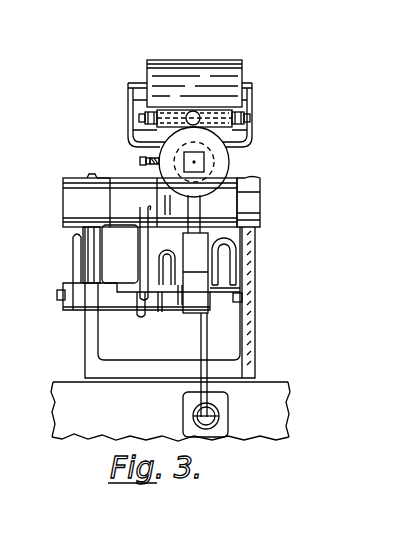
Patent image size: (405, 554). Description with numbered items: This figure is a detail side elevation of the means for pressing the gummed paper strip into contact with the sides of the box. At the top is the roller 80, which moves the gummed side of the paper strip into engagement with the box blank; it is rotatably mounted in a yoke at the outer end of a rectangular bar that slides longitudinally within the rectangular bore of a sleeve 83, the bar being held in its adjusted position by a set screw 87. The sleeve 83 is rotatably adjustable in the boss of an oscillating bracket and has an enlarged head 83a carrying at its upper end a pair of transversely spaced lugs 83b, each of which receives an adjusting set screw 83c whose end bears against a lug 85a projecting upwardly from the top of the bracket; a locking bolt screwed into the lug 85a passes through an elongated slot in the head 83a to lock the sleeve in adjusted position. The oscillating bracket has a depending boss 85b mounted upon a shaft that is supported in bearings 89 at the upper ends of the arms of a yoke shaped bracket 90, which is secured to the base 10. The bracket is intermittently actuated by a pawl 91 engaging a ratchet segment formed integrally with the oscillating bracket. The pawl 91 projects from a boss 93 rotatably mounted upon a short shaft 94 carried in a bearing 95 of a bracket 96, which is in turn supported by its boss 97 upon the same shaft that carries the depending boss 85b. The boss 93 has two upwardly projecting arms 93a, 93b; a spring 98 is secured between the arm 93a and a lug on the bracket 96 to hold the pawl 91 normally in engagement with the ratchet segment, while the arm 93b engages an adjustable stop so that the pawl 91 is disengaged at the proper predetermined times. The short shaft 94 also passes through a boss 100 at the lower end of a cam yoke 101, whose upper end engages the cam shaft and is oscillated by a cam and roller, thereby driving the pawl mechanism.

The base 10 is at (288, 383).
The roller 80 is at (242, 62).
The sleeve 83 is at (214, 152).
The enlarged head 83a is at (228, 160).
The lugs 83b is at (230, 111).
The adjusting set screw 83c is at (243, 121).
The lug 85a is at (203, 110).
The depending boss 85b is at (226, 200).
The set screw 87 is at (140, 161).
The bearings 89 is at (63, 192).
The yoke shaped bracket 90 is at (248, 320).
The pawl 91 is at (201, 342).
The boss 93 is at (181, 305).
The arm 93a is at (166, 290).
The arm 93b is at (226, 268).
The short shaft 94 is at (57, 293).
The bearing 95 is at (139, 300).
The bracket 96 is at (140, 244).
The boss 97 is at (105, 178).
The spring 98 is at (168, 240).
The boss 100 is at (75, 297).
The cam yoke 101 is at (72, 240).